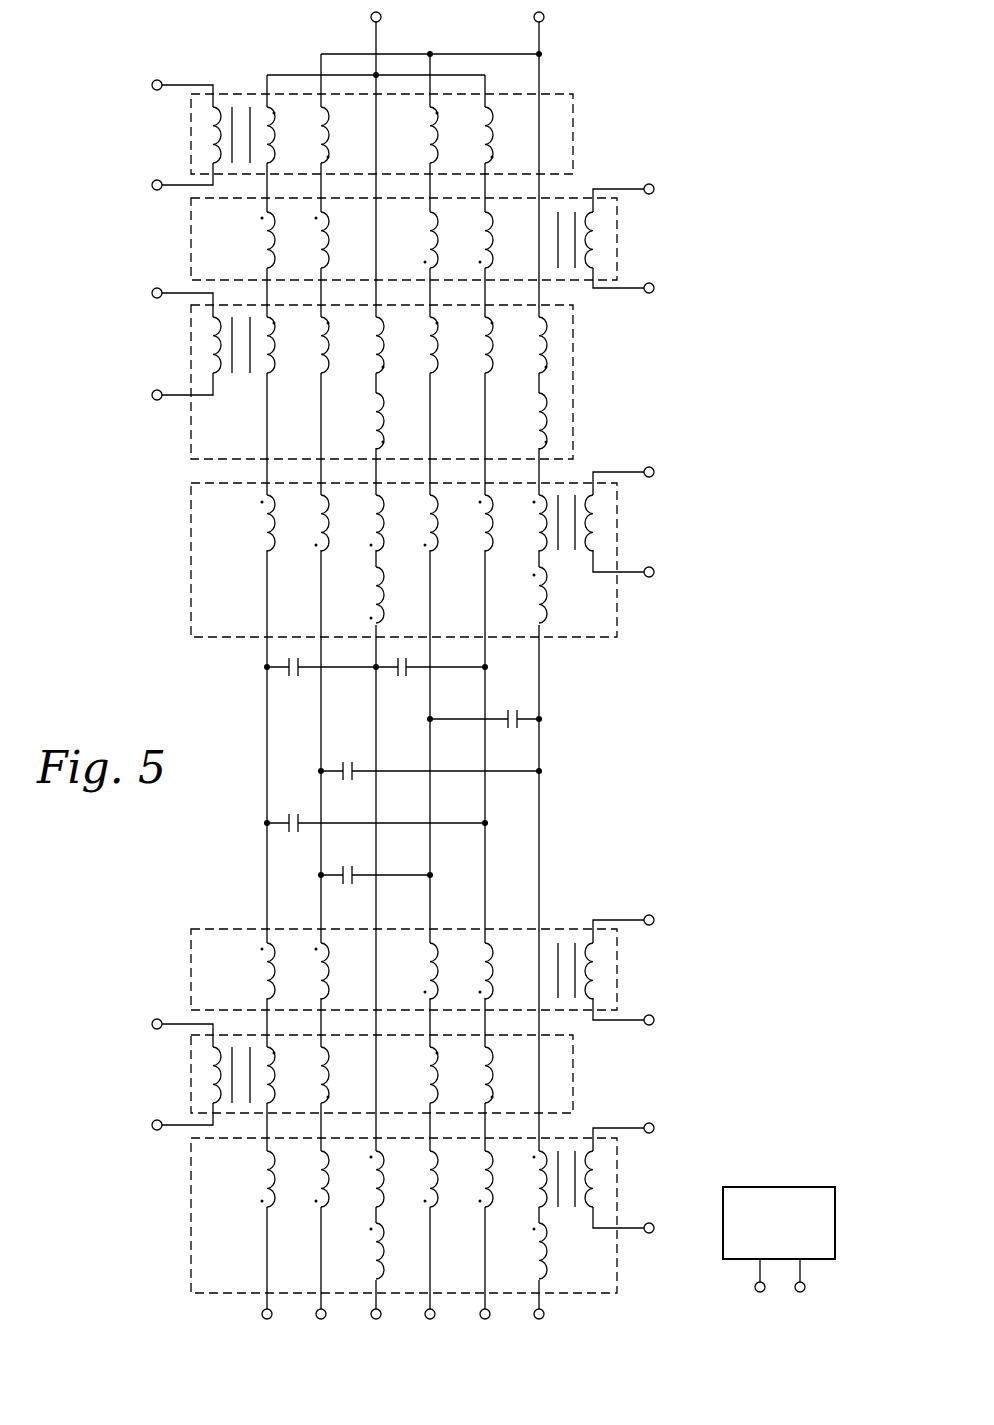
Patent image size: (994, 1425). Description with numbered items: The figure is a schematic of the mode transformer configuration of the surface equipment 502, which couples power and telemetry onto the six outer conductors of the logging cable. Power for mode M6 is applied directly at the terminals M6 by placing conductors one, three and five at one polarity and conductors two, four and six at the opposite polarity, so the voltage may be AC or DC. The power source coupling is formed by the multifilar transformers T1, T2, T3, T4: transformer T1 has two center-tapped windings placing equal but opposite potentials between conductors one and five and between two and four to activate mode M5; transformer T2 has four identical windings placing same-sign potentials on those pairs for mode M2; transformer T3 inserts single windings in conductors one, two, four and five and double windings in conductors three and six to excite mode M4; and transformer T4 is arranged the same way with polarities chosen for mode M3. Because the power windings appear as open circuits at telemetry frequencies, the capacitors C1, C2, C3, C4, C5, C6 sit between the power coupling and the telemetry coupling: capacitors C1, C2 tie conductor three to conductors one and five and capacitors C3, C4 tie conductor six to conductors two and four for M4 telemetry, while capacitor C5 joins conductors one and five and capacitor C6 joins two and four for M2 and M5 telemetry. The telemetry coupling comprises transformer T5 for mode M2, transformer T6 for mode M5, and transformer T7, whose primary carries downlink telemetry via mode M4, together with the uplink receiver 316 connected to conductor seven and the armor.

The surface equipment 502 is at (357, 678).
The uplink receiver 316 is at (779, 1187).
The multifilar transformer T1 is at (573, 119).
The multifilar transformer T2 is at (191, 236).
The multifilar transformer T3 is at (573, 337).
The multifilar transformer T4 is at (191, 519).
The transformer T5 is at (191, 967).
The transformer T6 is at (573, 1065).
The transformer T7 is at (191, 1174).
The capacitor C1 is at (321, 682).
The capacitor C2 is at (432, 682).
The capacitor C3 is at (430, 786).
The capacitor C4 is at (484, 735).
The capacitor C5 is at (376, 838).
The capacitor C6 is at (375, 890).
The mode M2 is at (613, 604).
The mode M3 is at (613, 522).
The mode M4 is at (404, 760).
The mode M5 is at (195, 605).
The mode M6 is at (405, 41).